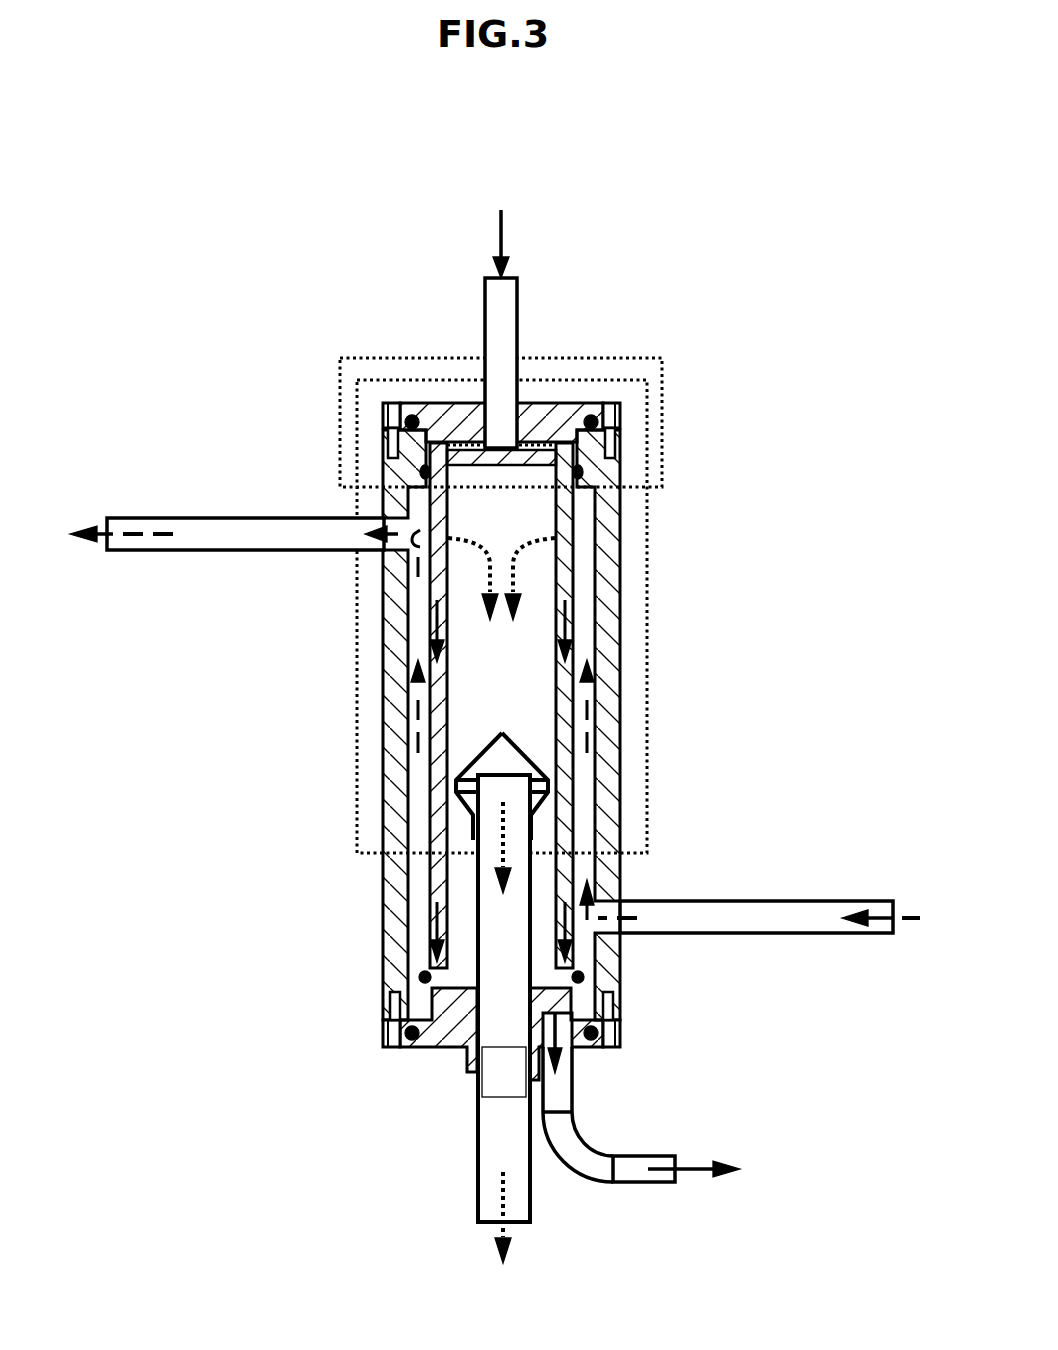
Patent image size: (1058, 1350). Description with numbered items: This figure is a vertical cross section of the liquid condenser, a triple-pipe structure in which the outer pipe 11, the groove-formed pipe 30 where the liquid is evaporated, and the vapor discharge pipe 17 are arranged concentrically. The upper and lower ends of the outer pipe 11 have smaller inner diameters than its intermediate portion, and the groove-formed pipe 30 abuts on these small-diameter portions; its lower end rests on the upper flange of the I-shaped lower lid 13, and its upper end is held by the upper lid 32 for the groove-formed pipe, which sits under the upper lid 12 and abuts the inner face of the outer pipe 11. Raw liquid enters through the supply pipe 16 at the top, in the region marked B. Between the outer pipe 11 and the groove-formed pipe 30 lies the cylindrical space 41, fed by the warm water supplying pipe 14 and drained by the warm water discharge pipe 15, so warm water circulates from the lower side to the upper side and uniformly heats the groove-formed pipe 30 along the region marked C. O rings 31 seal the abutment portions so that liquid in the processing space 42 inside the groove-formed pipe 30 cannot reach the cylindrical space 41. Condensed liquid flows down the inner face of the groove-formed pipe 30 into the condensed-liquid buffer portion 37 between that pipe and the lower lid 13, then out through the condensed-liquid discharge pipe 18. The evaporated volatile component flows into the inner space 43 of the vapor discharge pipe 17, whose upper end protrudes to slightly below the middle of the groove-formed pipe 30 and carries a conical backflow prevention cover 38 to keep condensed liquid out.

The outer pipe 11 is at (600, 643).
The upper lid 12 is at (448, 417).
The lower lid 13 is at (395, 1048).
The warm water supplying pipe 14 is at (750, 901).
The warm water discharge pipe 15 is at (200, 518).
The raw material supply pipe 16 is at (517, 311).
The vapor discharge pipe 17 is at (478, 1130).
The condensed-liquid discharge pipe 18 is at (640, 1156).
The groove-formed pipe 30 is at (383, 880).
The O rings 31 is at (585, 470).
The upper lid for the groove-formed pipe 32 is at (560, 500).
The condensed-liquid buffer portion 37 is at (570, 1013).
The backflow prevention cover 38 is at (478, 750).
The cylindrical space 41 is at (585, 592).
The processing space 42 is at (522, 718).
The inner space of the vapor discharge pipe 43 is at (500, 1090).
The region B is at (625, 358).
The region C is at (647, 822).